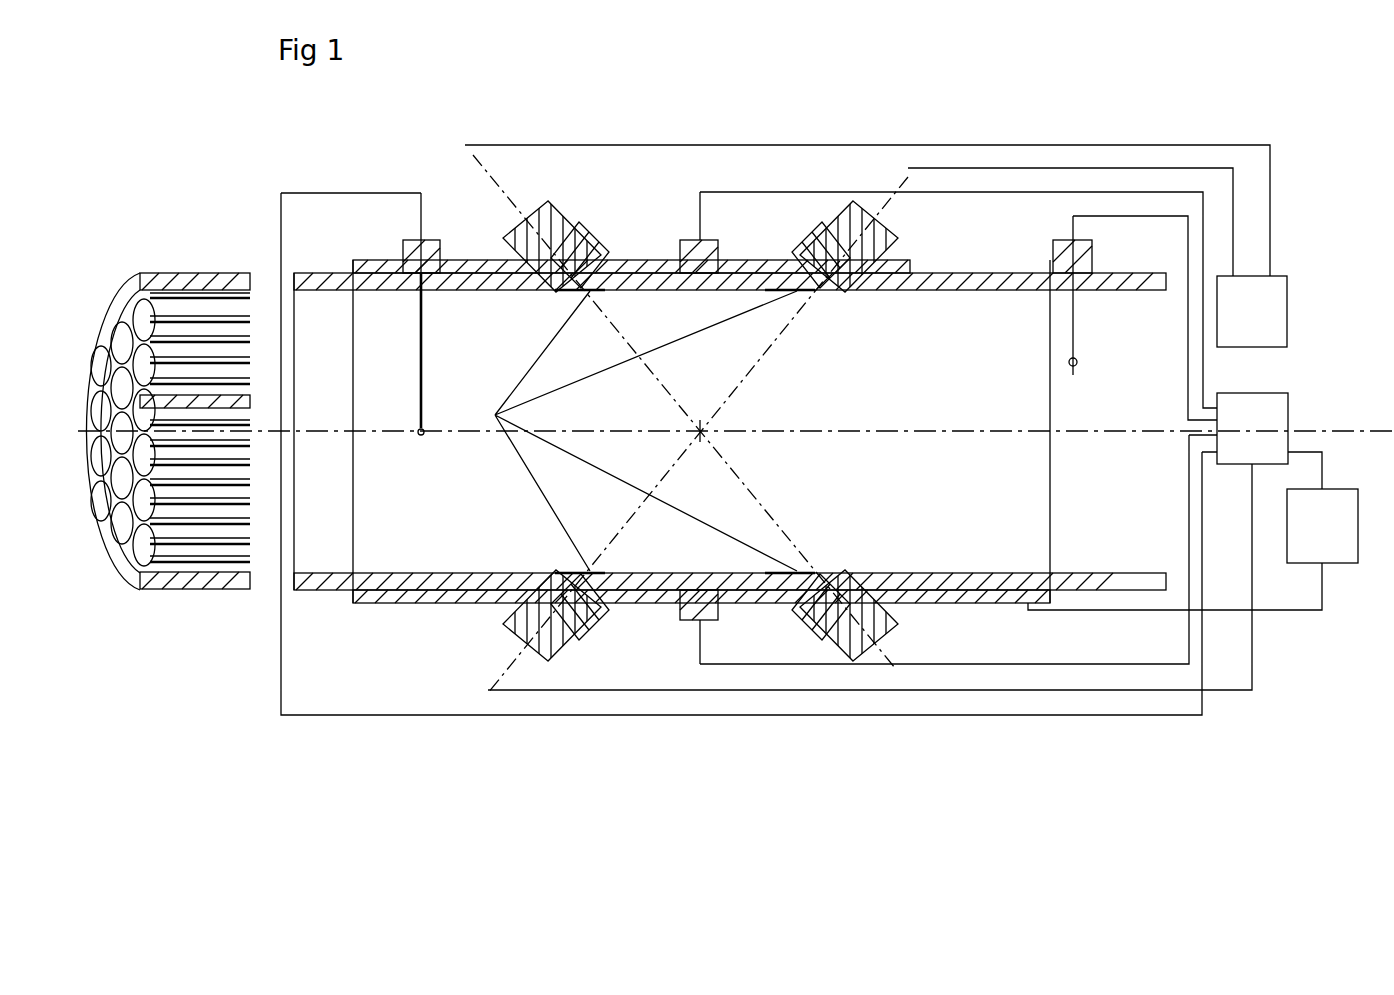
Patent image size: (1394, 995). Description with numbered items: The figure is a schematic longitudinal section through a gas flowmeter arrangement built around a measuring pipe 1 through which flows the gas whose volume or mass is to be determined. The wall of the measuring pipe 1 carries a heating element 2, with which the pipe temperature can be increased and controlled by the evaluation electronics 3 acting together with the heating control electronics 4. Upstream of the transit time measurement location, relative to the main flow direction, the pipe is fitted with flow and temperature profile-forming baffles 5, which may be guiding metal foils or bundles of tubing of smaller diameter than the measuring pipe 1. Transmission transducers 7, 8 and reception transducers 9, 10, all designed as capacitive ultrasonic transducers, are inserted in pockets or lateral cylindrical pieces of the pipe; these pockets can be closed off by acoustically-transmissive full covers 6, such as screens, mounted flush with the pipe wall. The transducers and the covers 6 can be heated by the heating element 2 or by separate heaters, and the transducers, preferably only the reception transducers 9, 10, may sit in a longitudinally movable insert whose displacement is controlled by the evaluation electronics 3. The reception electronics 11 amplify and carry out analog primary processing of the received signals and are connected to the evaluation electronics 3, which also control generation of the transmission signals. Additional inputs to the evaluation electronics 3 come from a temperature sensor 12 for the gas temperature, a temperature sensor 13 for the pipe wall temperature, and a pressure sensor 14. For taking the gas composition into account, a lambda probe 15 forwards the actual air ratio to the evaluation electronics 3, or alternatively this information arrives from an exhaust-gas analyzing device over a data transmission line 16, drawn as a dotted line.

The measuring pipe 1 is at (425, 600).
The heating element 2 is at (952, 600).
The evaluation electronics 3 is at (784, 453).
The heating control electronics 4 is at (1193, 531).
The flow and temperature profile-forming baffles 5 is at (183, 479).
The acoustically-transmissive full covers 6 is at (495, 415).
The transmission transducer 7 is at (549, 614).
The transmission transducer 8 is at (851, 614).
The reception transducer 9 is at (556, 237).
The reception transducer 10 is at (865, 247).
The reception electronics 11 is at (876, 246).
The temperature sensor 12 is at (411, 314).
The temperature sensor 13 is at (689, 232).
The pressure sensor 14 is at (683, 627).
The lambda probe 15 is at (1064, 290).
The data transmission line 16 is at (1359, 408).